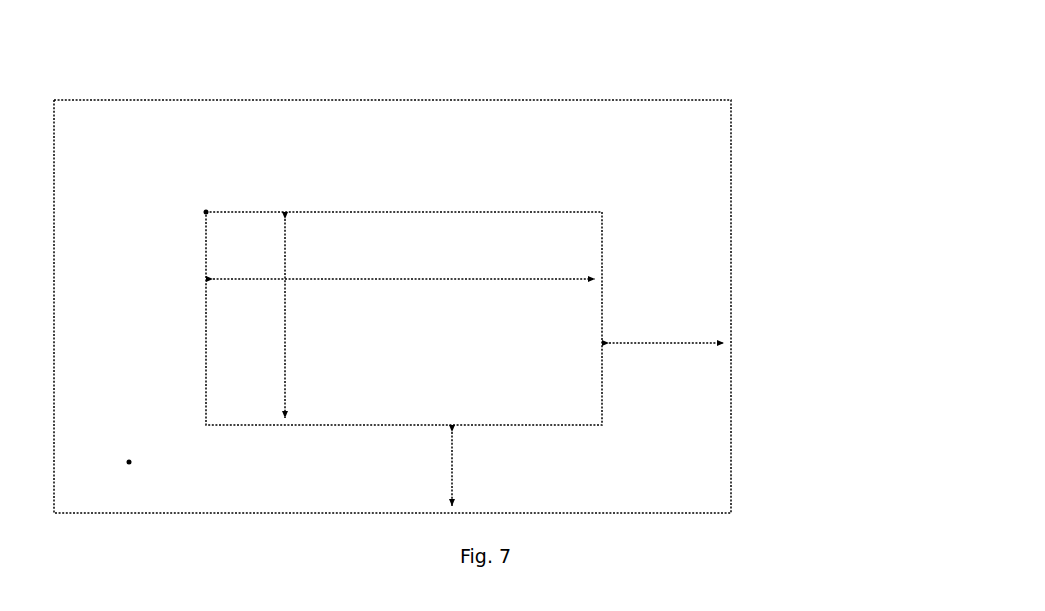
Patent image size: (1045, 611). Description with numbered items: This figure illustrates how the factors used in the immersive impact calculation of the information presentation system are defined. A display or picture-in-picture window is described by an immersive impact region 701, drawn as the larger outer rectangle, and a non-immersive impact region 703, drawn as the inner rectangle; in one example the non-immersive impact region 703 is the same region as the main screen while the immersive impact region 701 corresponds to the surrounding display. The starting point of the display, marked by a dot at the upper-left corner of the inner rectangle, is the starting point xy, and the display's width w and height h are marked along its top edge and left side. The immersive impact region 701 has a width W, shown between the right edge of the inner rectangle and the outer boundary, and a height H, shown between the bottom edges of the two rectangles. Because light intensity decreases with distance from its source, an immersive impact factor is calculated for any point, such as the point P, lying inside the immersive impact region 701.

The immersive impact region 701 is at (578, 125).
The non-immersive impact region 703 is at (569, 239).
The width of the display w is at (404, 293).
The height of the display h is at (296, 318).
The width of the immersive impact region W is at (666, 361).
The height of the immersive impact region H is at (466, 469).
The point P(Px, Py) P is at (130, 481).
The starting point (x,y) of the display xy is at (194, 199).